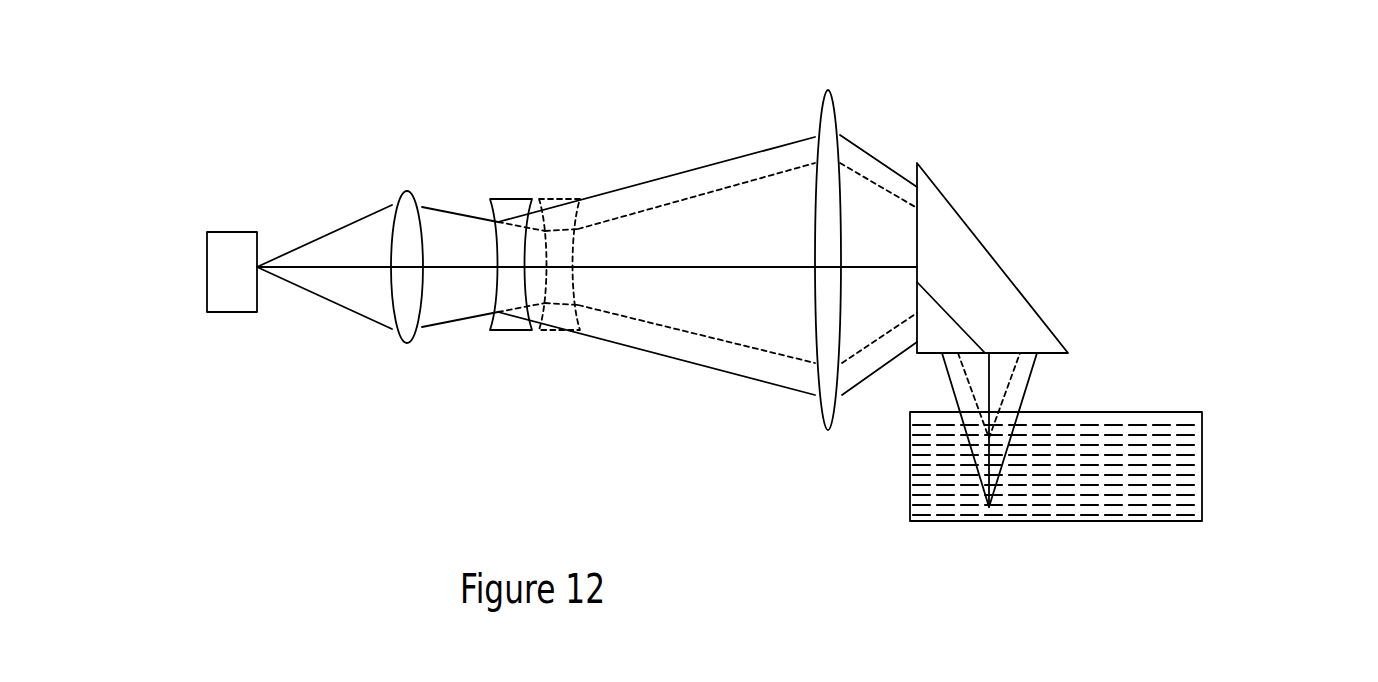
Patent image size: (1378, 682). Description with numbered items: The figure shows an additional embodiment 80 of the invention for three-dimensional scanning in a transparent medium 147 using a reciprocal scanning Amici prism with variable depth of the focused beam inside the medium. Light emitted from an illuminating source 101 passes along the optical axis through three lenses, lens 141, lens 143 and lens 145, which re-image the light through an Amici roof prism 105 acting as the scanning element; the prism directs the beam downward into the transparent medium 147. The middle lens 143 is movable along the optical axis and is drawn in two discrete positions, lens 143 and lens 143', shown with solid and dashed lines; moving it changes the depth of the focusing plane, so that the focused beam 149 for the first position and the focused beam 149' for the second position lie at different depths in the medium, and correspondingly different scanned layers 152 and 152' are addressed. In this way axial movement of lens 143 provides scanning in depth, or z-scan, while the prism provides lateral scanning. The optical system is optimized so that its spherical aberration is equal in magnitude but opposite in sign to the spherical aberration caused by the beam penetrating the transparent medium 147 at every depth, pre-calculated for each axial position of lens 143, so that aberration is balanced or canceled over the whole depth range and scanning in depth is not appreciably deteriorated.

The illuminating source 101 is at (207, 253).
The lens 141 is at (420, 194).
The lens 143 is at (573, 222).
The lens (second position) 143' is at (623, 305).
The lens 145 is at (833, 122).
The Amici roof prism 105 is at (953, 206).
The transparent medium 147 is at (910, 456).
The focused beam 149 is at (1033, 471).
The focused beam (second position) 149' is at (1042, 400).
The scanned layer 152 is at (1123, 461).
The scanned layer (second position) 152' is at (1126, 392).
The embodiment 80 is at (312, 483).